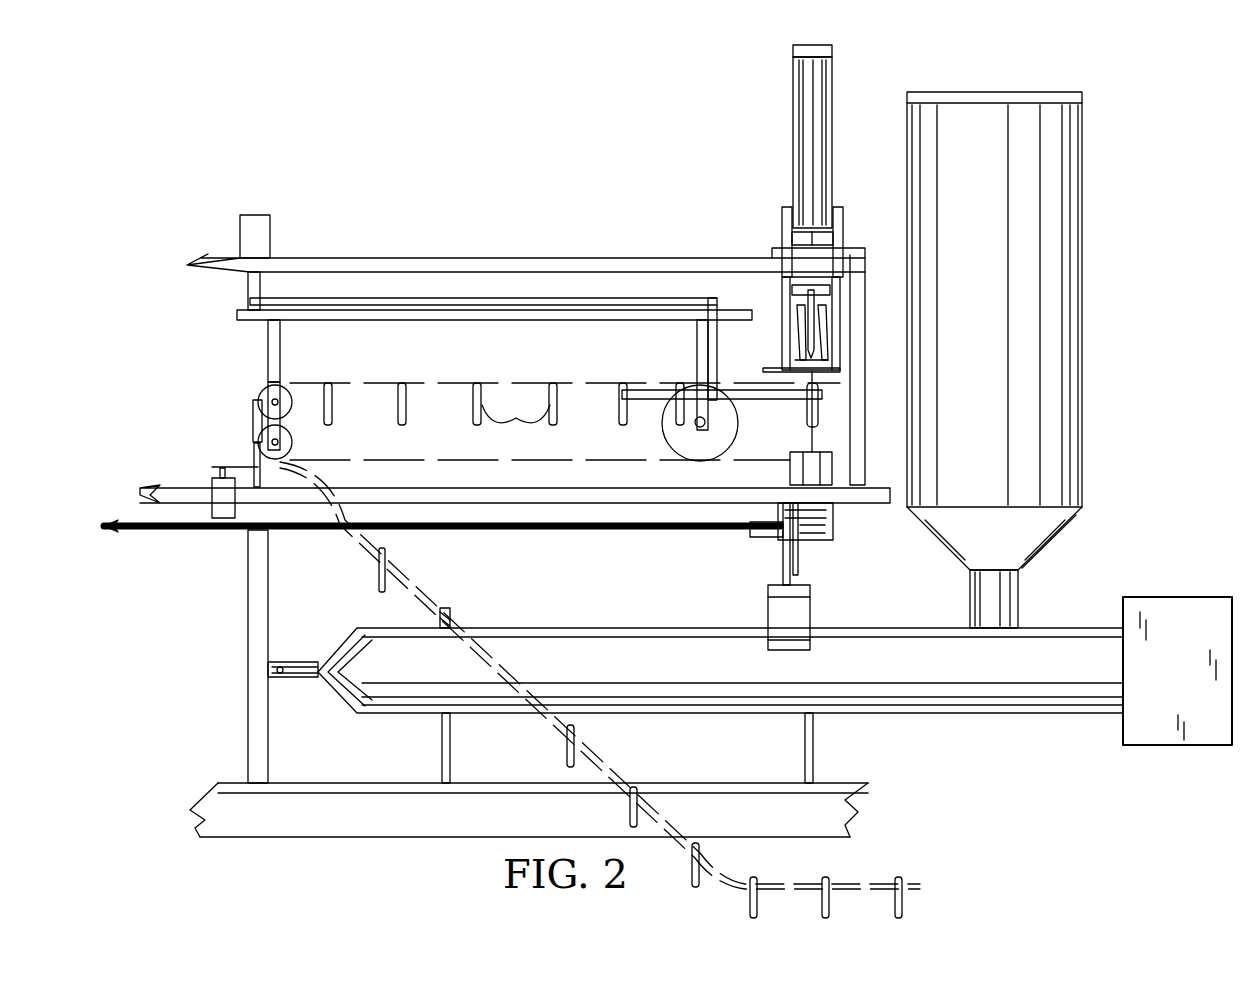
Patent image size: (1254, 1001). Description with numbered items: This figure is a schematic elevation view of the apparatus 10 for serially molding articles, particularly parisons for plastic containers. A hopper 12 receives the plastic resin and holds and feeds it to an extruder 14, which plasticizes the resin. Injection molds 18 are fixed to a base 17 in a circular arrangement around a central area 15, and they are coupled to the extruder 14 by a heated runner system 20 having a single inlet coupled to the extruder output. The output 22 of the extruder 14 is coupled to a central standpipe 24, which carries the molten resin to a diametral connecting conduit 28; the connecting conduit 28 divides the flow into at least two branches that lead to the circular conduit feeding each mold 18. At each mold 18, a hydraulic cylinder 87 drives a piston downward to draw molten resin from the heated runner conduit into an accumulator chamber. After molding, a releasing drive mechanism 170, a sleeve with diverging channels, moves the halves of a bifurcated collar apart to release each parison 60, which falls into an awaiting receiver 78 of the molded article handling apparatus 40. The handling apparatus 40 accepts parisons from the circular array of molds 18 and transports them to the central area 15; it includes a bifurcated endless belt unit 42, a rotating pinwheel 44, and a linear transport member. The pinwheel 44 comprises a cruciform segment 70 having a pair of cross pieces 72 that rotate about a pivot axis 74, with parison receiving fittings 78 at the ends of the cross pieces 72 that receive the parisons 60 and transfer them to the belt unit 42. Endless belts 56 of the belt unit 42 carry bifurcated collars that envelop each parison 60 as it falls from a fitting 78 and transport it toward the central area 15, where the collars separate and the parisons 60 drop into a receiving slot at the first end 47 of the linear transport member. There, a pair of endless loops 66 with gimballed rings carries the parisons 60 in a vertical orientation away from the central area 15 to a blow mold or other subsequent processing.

The apparatus 10 is at (560, 235).
The hopper 12 is at (1065, 345).
The extruder 14 is at (820, 695).
The central area 15 is at (243, 405).
The base 17 is at (708, 788).
The mold 18 is at (835, 470).
The heated runner system 20 is at (235, 553).
The output 22 is at (290, 685).
The central standpipe 24 is at (248, 697).
The diametral connecting conduit 28 is at (485, 540).
The molded article handling apparatus 40 is at (218, 313).
The bifurcated endless belt unit 42 is at (460, 380).
The rotating pinwheel 44 is at (733, 382).
The first end 47 is at (212, 440).
The endless belts 56 is at (372, 385).
The parison 60 is at (360, 608).
The endless loops 66 is at (590, 745).
The cruciform segment 70 is at (752, 410).
The cross pieces 72 is at (652, 410).
The pivot axis 74 is at (697, 335).
The parison receiving fitting 78 is at (800, 418).
The hydraulic cylinder 87 is at (805, 602).
The releasing drive mechanism 170 is at (845, 305).